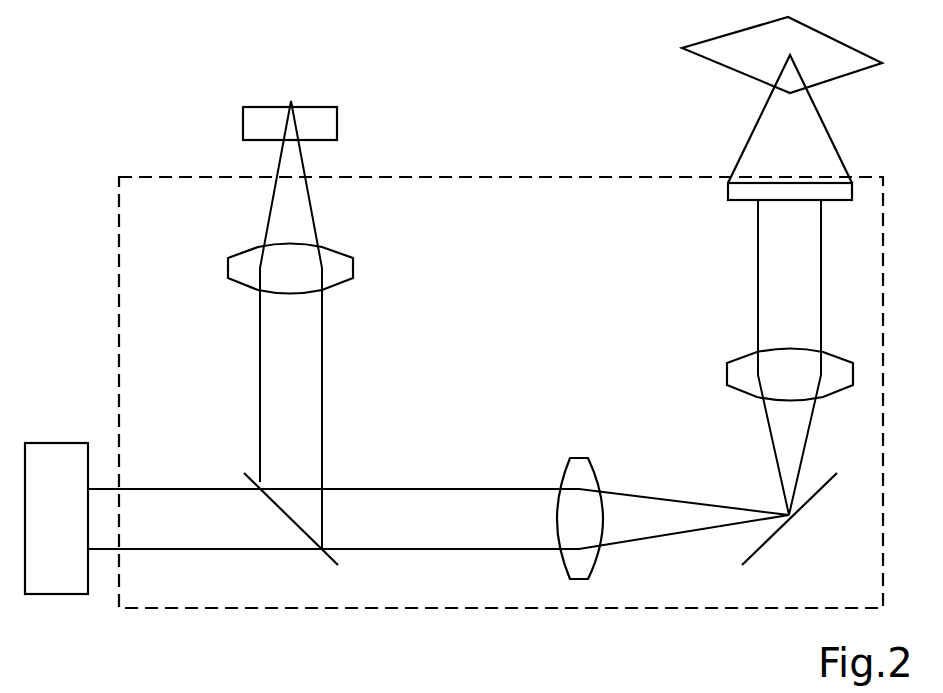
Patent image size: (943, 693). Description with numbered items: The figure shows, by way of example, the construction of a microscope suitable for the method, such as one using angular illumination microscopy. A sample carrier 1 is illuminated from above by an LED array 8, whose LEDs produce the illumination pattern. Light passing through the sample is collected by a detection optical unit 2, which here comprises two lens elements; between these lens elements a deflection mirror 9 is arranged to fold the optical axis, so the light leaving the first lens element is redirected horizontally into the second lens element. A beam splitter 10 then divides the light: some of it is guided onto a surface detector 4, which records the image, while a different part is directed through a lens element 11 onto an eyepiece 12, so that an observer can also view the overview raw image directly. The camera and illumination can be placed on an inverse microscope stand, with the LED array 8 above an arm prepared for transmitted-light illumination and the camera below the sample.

The sample carrier 1 is at (733, 195).
The detection optical unit 2 is at (580, 458).
The surface detector 4 is at (58, 443).
The LED array 8 is at (700, 51).
The deflection mirror 9 is at (772, 540).
The beam splitter 10 is at (245, 477).
The lens element 11 is at (232, 267).
The eyepiece 12 is at (248, 121).